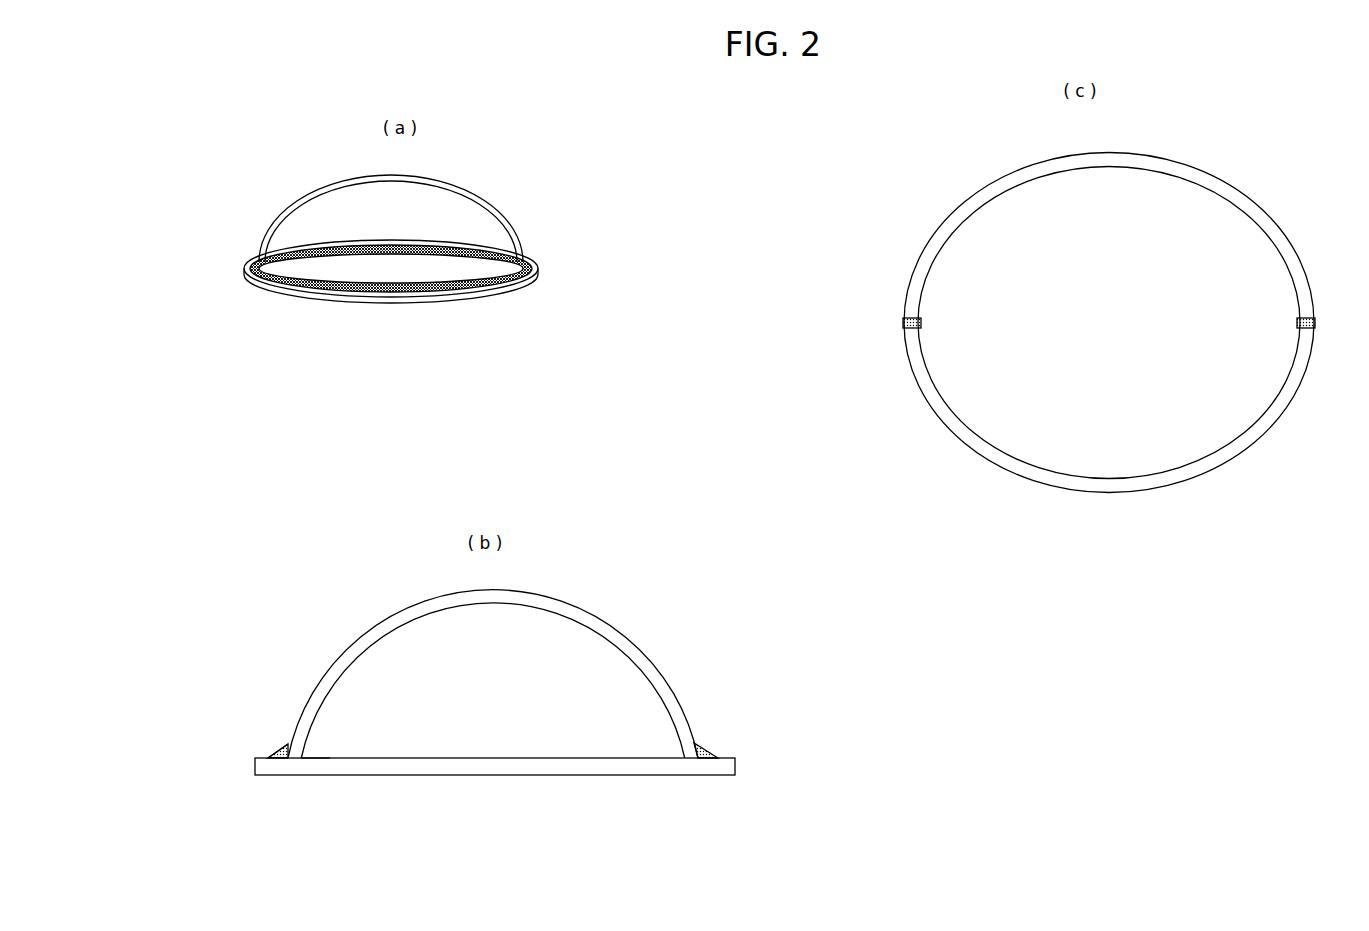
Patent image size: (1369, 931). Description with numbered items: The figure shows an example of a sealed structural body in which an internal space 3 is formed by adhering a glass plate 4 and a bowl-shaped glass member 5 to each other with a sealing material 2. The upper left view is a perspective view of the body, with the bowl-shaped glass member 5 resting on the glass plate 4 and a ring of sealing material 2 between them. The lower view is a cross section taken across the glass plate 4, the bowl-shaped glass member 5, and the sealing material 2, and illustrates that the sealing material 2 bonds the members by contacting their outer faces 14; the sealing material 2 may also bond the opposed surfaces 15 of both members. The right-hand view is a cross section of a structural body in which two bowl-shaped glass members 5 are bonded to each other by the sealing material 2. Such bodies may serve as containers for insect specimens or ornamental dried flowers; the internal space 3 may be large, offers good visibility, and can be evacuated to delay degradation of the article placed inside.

The sealing material 2 is at (310, 288).
The internal space 3 is at (518, 628).
The glass plate 4 is at (532, 287).
The bowl-shaped glass member 5 is at (510, 223).
The outer faces 14 is at (318, 683).
The opposed surfaces 15 is at (305, 750).